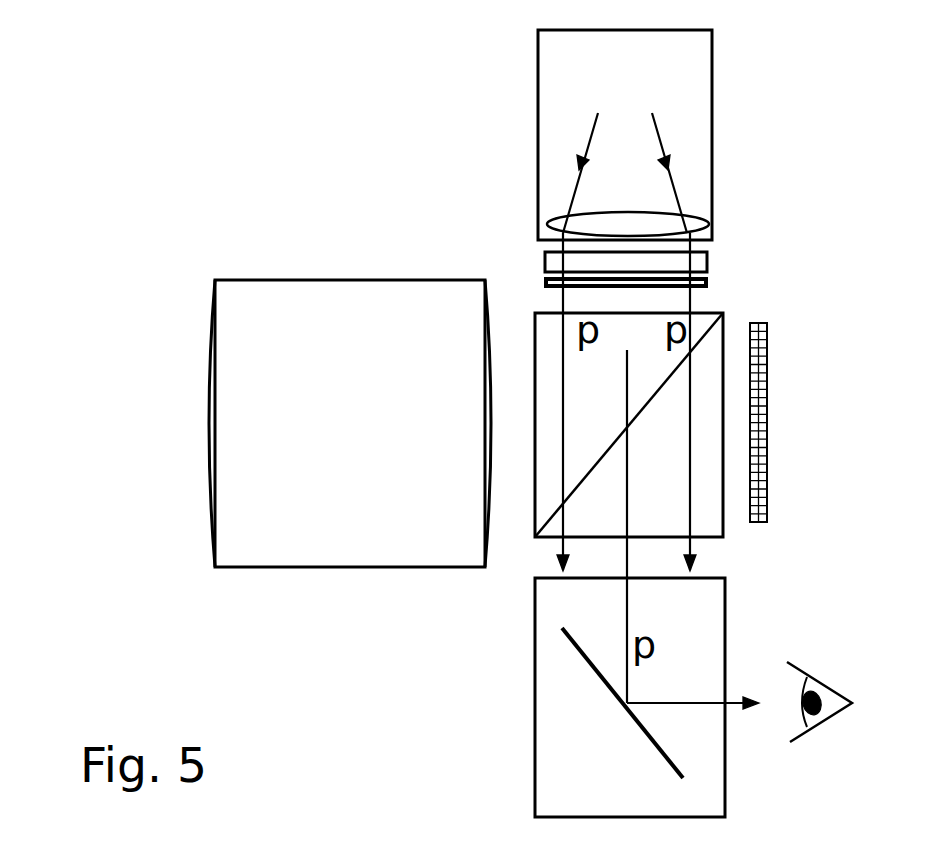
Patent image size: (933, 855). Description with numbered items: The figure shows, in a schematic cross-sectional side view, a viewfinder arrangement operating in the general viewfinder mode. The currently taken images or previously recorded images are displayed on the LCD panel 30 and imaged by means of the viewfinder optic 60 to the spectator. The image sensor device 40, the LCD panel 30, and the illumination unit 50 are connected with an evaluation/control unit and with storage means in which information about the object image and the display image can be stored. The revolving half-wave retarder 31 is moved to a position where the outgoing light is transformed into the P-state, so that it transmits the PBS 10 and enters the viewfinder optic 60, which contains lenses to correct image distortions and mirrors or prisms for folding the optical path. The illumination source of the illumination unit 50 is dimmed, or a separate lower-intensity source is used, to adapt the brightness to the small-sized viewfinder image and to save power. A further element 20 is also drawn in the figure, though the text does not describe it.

The PBS 10 is at (374, 348).
The polarizing beam splitter 20 is at (678, 512).
The LCD panel 30 is at (718, 258).
The revolving half-wave retarder 31 is at (718, 283).
The image sensor device 40 is at (768, 421).
The illumination unit 50 is at (645, 86).
The viewfinder optic 60 is at (660, 799).